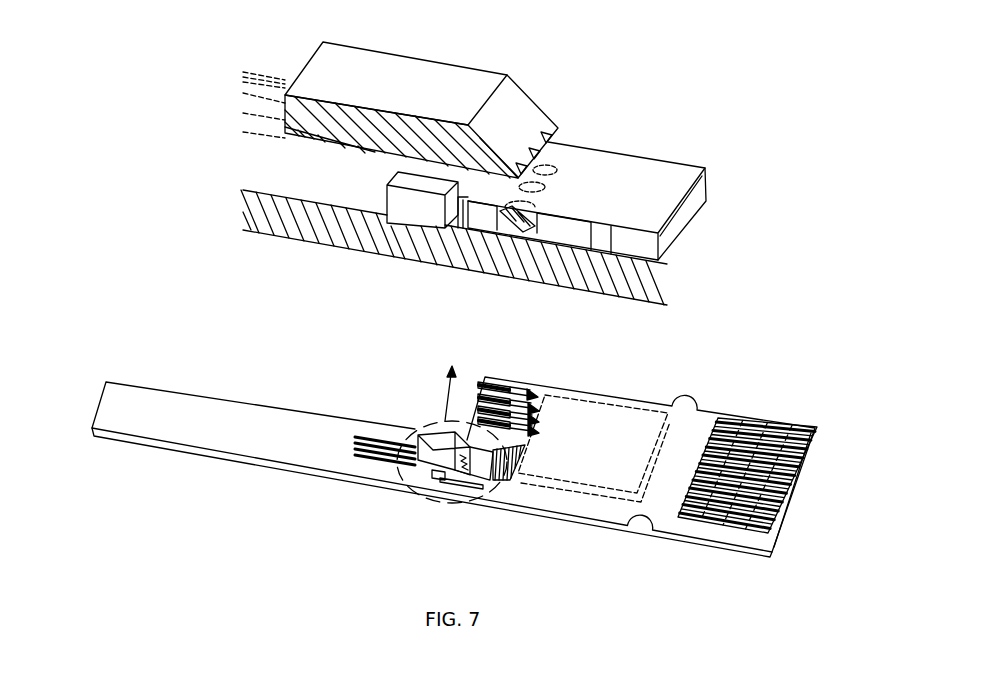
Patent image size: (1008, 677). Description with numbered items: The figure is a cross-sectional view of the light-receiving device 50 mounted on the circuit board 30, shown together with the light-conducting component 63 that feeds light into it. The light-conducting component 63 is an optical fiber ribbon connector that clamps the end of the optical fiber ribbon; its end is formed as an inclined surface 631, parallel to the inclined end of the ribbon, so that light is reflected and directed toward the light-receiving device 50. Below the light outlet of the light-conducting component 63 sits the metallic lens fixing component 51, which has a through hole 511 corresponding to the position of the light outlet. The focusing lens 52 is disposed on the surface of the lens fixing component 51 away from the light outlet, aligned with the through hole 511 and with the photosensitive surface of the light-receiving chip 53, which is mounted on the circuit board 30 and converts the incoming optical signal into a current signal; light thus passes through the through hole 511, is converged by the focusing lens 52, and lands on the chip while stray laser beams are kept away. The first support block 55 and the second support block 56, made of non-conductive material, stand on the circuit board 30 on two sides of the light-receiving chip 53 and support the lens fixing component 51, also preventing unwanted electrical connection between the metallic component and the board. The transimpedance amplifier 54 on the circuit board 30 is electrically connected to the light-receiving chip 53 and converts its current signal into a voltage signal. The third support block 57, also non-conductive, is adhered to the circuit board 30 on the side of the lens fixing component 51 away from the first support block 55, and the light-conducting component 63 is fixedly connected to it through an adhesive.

The circuit board 30 is at (295, 218).
The light-receiving device 50 is at (466, 490).
The lens fixing component 51 is at (633, 165).
The through hole 511 is at (550, 162).
The focusing lens 52 is at (484, 218).
The light-receiving chip 53 is at (527, 230).
The transimpedance amplifier 54 is at (572, 240).
The first support block 55 is at (462, 224).
The second support block 56 is at (637, 248).
The third support block 57 is at (417, 210).
The light-conducting component 63 is at (425, 77).
The inclined surface 631 is at (510, 115).